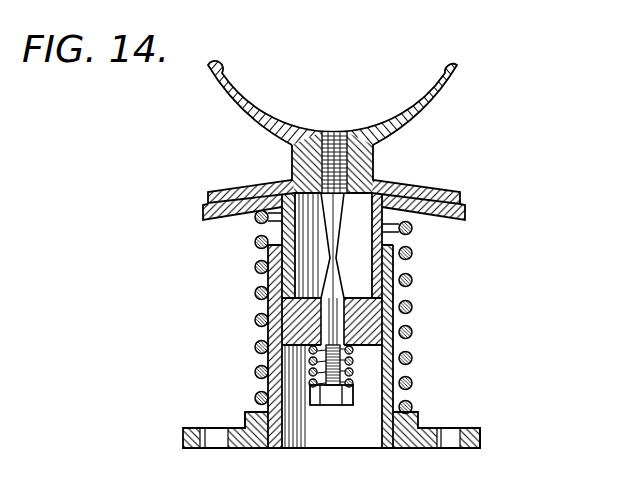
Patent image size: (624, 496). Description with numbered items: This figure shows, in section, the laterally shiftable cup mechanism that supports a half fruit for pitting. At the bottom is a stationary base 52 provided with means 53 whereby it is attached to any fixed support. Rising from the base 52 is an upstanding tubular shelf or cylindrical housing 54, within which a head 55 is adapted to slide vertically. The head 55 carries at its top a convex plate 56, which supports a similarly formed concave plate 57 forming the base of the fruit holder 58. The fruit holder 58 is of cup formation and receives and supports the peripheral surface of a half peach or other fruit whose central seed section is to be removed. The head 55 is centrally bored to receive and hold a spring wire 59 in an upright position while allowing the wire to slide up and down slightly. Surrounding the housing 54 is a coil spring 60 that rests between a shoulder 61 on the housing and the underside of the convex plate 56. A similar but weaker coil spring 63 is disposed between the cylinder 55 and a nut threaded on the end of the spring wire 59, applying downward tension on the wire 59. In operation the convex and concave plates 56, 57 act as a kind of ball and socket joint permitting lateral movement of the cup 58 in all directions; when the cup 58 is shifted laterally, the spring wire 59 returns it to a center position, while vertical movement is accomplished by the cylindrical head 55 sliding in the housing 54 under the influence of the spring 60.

The fruit holder 58 is at (235, 108).
The convex plate 56 is at (205, 220).
The concave plate 57 is at (452, 193).
The tubular shelf 54 is at (393, 293).
The head 55 is at (302, 331).
The spring wire 59 is at (323, 260).
The coil spring 60 is at (413, 358).
The coil spring 63 is at (310, 360).
The shoulder 61 is at (247, 412).
The stationary base 52 is at (418, 412).
The means 53 is at (448, 447).